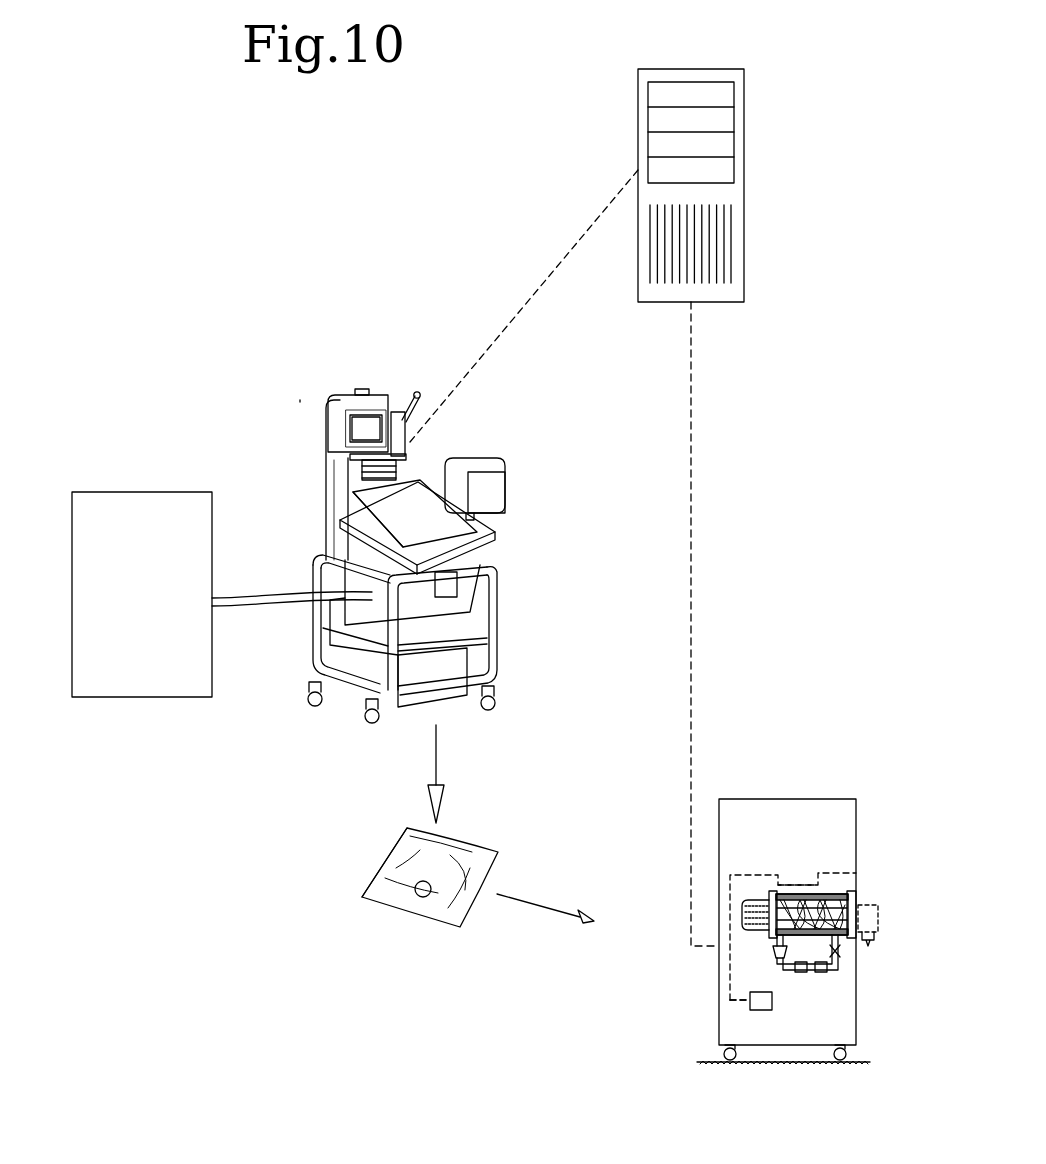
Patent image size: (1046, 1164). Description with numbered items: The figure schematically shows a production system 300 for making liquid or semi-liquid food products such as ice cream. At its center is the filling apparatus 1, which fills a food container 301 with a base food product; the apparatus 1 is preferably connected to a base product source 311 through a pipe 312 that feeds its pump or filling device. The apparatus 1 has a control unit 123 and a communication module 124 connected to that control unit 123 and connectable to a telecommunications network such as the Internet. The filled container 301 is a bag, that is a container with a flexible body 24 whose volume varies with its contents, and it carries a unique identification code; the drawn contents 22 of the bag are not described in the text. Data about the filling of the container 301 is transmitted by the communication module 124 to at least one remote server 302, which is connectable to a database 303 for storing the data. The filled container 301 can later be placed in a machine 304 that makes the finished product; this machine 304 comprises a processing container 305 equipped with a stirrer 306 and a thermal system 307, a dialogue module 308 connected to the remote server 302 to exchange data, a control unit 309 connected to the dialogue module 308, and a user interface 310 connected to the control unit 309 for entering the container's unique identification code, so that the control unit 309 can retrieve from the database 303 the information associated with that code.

The filling apparatus 1 is at (356, 371).
The content 22 is at (414, 880).
The flexible body 24 is at (484, 836).
The control unit 123 is at (321, 396).
The communication module 124 is at (378, 386).
The production system 300 is at (268, 390).
The food container 301 is at (411, 937).
The remote server 302 is at (774, 198).
The database 303 is at (769, 251).
The machine 304 is at (789, 773).
The processing container 305 is at (802, 876).
The stirrer 306 is at (854, 940).
The thermal system 307 is at (812, 987).
The dialogue module 308 is at (750, 1010).
The control unit 309 is at (762, 1020).
The user interface 310 is at (858, 873).
The base product source 311 is at (160, 606).
The pipe 312 is at (261, 588).